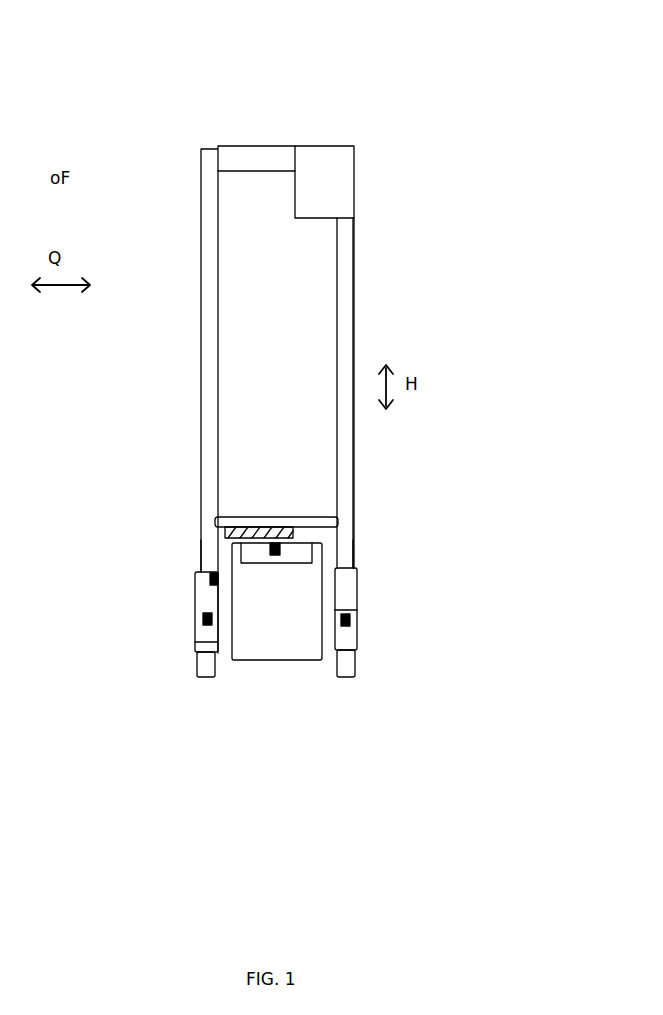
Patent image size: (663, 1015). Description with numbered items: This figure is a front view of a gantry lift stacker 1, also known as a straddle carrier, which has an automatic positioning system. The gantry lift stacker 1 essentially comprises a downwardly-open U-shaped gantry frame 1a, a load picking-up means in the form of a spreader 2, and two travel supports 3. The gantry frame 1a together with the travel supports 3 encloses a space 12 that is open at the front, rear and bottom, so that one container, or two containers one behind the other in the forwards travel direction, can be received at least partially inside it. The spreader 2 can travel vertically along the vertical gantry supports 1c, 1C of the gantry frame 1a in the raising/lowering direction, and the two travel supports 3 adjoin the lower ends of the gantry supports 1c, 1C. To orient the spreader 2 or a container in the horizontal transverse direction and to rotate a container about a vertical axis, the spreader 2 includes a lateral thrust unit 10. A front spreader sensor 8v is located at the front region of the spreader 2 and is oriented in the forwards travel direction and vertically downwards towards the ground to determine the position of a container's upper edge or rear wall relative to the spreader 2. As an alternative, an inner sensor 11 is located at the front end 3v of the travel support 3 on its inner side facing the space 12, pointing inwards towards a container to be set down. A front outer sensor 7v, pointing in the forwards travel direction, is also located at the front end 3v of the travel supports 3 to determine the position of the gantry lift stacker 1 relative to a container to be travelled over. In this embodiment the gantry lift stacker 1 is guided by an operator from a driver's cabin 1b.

The gantry lift stacker 1 is at (282, 160).
The gantry frame 1a is at (348, 350).
The driver's cabin 1b is at (333, 178).
The gantry supports 1c is at (203, 548).
The gantry supports 1C is at (347, 550).
The space 12 is at (318, 307).
The lateral thrust unit 10 is at (245, 540).
The spreader 2 is at (303, 553).
The front spreader sensor 8v is at (273, 543).
The travel supports 3 is at (352, 605).
The front end 3v is at (348, 610).
The inner sensor 11 is at (210, 578).
The front outer sensor 7v is at (212, 625).